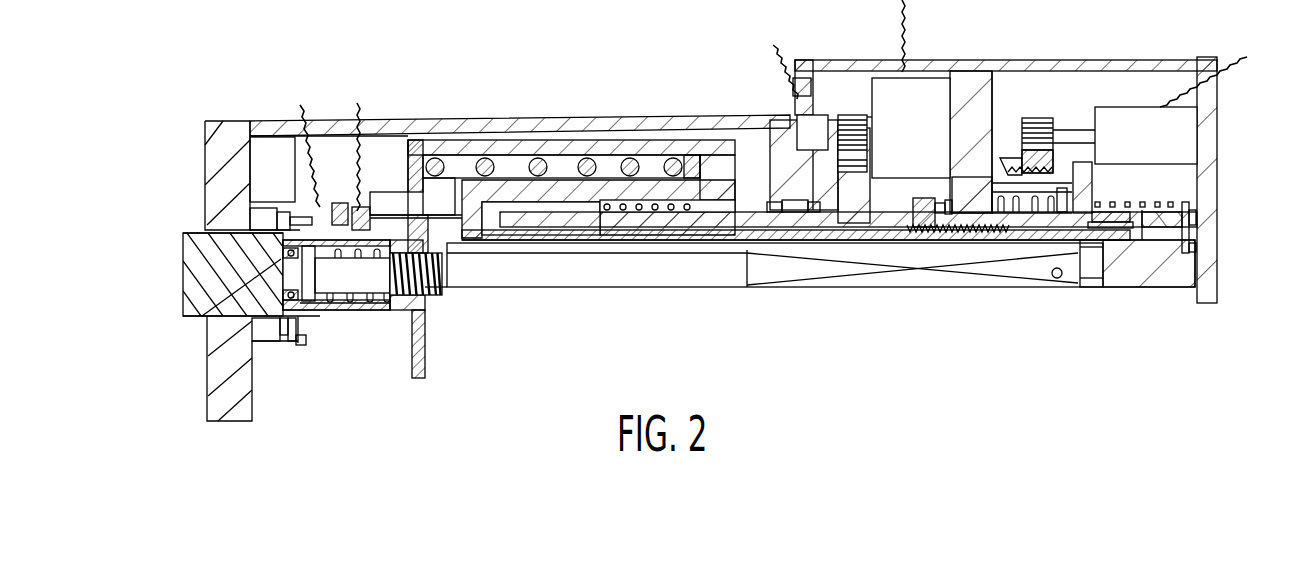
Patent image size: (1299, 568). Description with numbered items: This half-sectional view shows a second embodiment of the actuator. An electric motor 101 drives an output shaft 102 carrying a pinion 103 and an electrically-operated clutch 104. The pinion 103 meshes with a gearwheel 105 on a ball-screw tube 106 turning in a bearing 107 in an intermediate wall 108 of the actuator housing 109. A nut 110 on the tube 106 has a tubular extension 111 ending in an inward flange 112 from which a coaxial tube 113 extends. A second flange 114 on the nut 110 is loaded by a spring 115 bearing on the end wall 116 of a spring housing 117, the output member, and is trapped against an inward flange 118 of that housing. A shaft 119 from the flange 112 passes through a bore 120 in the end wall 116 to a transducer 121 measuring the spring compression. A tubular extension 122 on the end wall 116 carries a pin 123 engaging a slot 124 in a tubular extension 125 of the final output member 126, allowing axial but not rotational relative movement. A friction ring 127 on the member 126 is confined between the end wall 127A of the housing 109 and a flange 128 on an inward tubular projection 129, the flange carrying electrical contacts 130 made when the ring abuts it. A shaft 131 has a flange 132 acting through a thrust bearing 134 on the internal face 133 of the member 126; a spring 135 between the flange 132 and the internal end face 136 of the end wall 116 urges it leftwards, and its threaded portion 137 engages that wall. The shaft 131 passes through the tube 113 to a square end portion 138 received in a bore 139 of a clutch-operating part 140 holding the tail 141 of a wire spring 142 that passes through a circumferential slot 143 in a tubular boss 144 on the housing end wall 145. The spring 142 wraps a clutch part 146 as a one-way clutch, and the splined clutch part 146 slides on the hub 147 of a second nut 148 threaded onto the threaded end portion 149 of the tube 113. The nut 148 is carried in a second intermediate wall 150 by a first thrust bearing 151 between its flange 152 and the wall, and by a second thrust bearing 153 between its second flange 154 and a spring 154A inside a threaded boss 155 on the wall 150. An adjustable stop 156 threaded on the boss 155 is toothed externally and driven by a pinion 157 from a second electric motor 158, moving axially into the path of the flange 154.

The electric motor 101 is at (912, 104).
The output shaft 102 is at (833, 128).
The pinion 103 is at (870, 117).
The electrically-operated clutch 104 is at (795, 118).
The gearwheel 105 is at (850, 210).
The ball-screw tube 106 is at (632, 220).
The bearing 107 is at (790, 212).
The intermediate wall 108 is at (778, 172).
The actuator housing 109 is at (648, 113).
The nut 110 is at (613, 207).
The tubular extension 111 is at (515, 187).
The flange 112 is at (468, 232).
The tube 113 is at (590, 214).
The second flange 114 is at (697, 157).
The spring 115 is at (582, 163).
The end wall 116 is at (405, 150).
The spring housing 117 is at (510, 134).
The inwardly-projecting flange 118 is at (738, 118).
The shaft 119 is at (448, 198).
The bore 120 is at (430, 200).
The transducer 121 is at (380, 192).
The tubular extension 122 is at (360, 312).
The pin 123 is at (362, 225).
The slot 124 is at (352, 222).
The tubular extension 125 is at (372, 312).
The final output member 126 is at (228, 278).
The friction ring 127 is at (287, 333).
The frame block 127A is at (222, 185).
The flange 128 is at (303, 330).
The tubular projection 129 is at (272, 343).
The electrical contacts 130 is at (322, 205).
The shaft 131 is at (538, 265).
The flange 132 is at (307, 286).
The internal face 133 is at (232, 322).
The thrust bearing 134 is at (222, 254).
The spring 135 is at (367, 300).
The internal end face 136 is at (388, 297).
The threaded portion 137 is at (400, 265).
The end portion 138 is at (1027, 265).
The bore 139 is at (1057, 278).
The clutch-operating part 140 is at (1153, 258).
The tail 141 is at (1196, 248).
The wire spring 142 is at (1174, 191).
The circumferential slot 143 is at (1193, 235).
The tubular boss 144 is at (1190, 200).
The end wall 145 is at (1215, 88).
The clutch part 146 is at (1093, 219).
The hub 147 is at (1117, 227).
The second nut 148 is at (962, 234).
The threaded end portion 149 is at (935, 237).
The second intermediate wall 150 is at (973, 100).
The first thrust bearing 151 is at (945, 207).
The flange 152 is at (917, 206).
The second thrust bearing 153 is at (1063, 188).
The second flange 154 is at (988, 203).
The contact block 154A is at (1092, 176).
The threaded boss 155 is at (1002, 165).
The adjustable stop 156 is at (1030, 150).
The pinion 157 is at (1034, 120).
The second electric motor 158 is at (1128, 123).